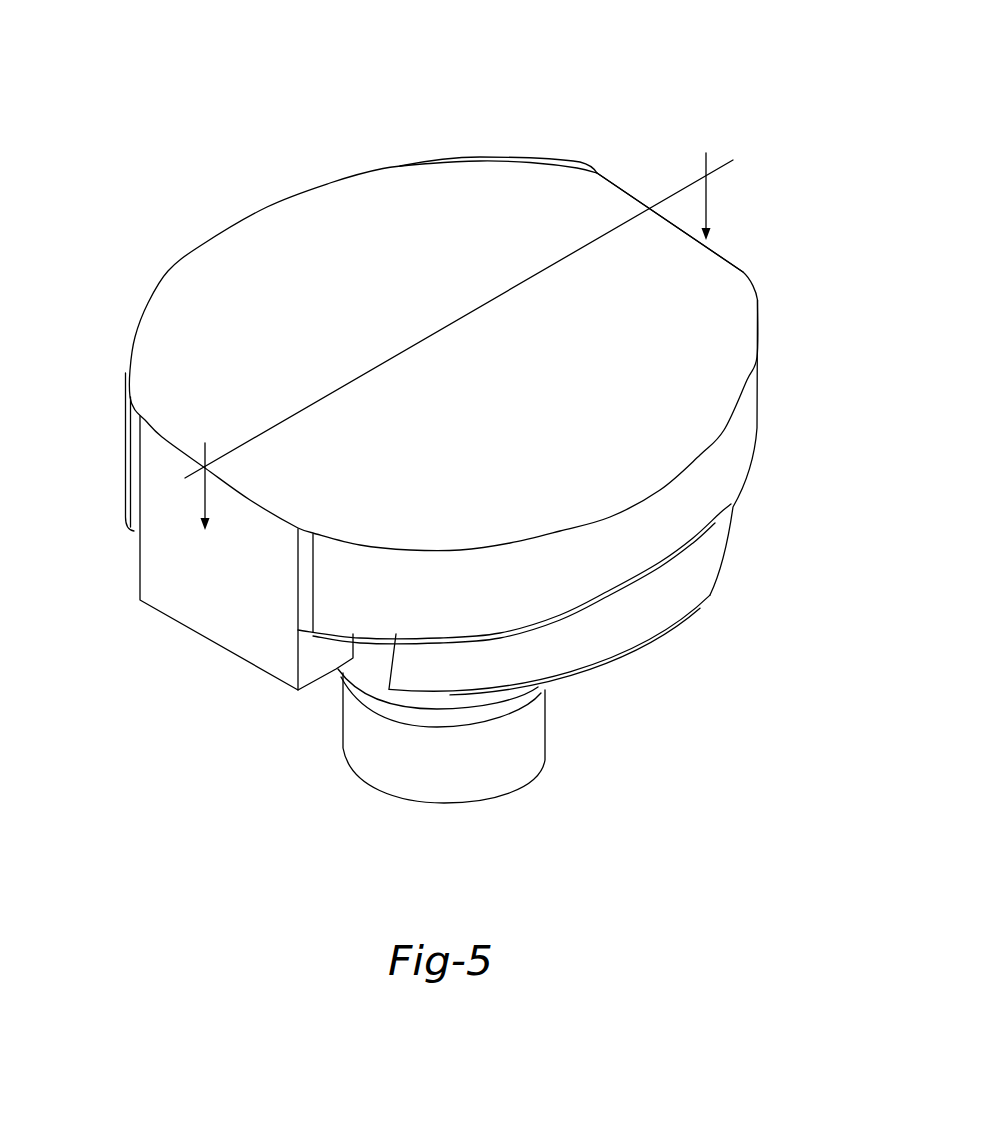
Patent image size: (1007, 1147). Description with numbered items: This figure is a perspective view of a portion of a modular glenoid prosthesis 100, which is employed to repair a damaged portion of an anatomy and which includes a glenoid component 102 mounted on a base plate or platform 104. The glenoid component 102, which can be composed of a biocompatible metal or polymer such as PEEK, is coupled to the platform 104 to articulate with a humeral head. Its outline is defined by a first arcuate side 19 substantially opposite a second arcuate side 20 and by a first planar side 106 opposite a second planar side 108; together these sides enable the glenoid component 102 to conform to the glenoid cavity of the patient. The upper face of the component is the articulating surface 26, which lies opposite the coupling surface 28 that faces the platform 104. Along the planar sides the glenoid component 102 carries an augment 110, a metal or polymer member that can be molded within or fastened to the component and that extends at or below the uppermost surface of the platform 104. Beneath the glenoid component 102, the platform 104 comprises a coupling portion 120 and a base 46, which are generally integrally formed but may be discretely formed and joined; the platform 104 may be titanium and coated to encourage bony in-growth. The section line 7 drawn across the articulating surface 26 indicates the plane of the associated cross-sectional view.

The modular glenoid prosthesis 100 is at (513, 66).
The glenoid component 102 is at (598, 158).
The second planar side 108 is at (627, 200).
The articulating surface 26 is at (413, 196).
The first arcuate side 19 is at (170, 277).
The second arcuate side 20 is at (743, 437).
The coupling surface 28 is at (682, 556).
The platform 104 is at (690, 626).
The first planar side 106 is at (150, 468).
The augment 110 is at (282, 699).
The coupling portion 120 is at (610, 686).
The base 46 is at (559, 755).
The section line 7- 7 is at (454, 330).